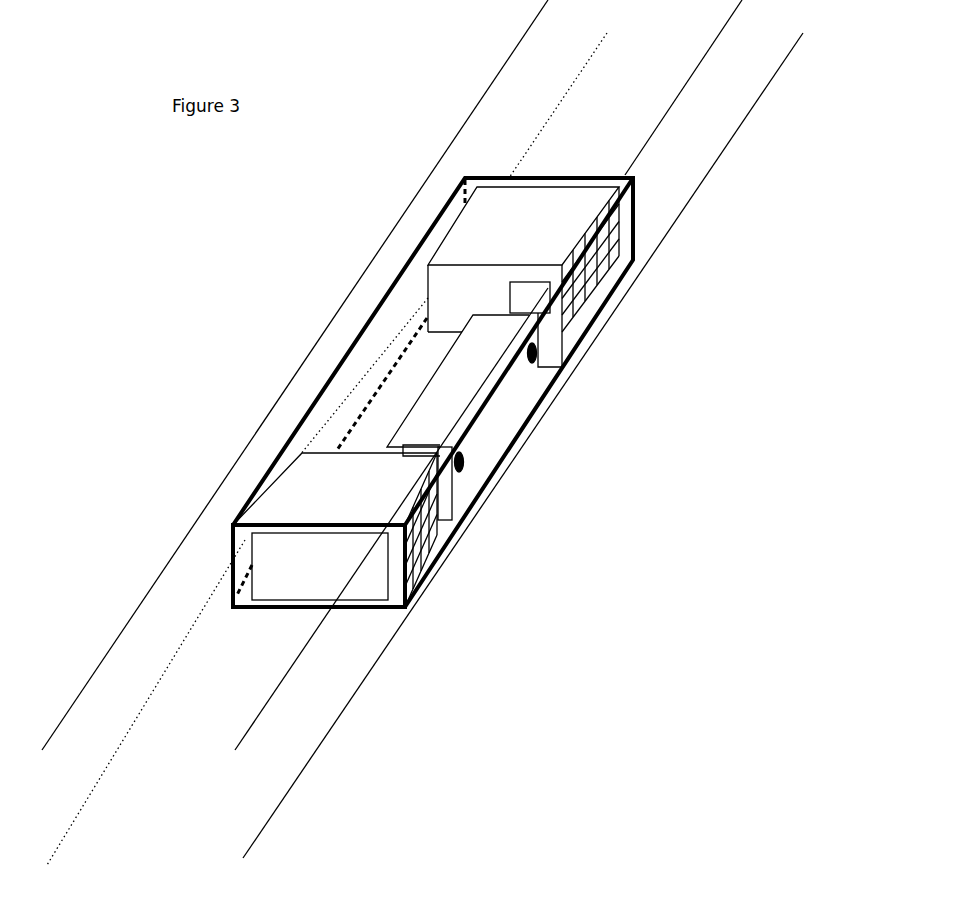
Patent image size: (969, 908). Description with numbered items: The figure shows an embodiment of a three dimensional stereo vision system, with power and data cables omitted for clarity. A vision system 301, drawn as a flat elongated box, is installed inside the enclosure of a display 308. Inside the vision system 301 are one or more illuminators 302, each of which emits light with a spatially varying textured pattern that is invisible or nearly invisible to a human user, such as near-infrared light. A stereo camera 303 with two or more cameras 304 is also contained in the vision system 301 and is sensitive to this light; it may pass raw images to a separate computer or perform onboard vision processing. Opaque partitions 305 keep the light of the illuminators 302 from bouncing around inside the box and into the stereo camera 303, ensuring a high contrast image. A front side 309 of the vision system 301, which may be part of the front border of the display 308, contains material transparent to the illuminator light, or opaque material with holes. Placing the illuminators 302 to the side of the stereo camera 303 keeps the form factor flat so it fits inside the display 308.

The vision system 301 is at (407, 608).
The illuminator 302 is at (426, 397).
The stereo camera 303 is at (458, 381).
The camera 304 is at (465, 467).
The opaque partition 305 is at (507, 538).
The display 308 is at (298, 718).
The front side 309 is at (625, 230).